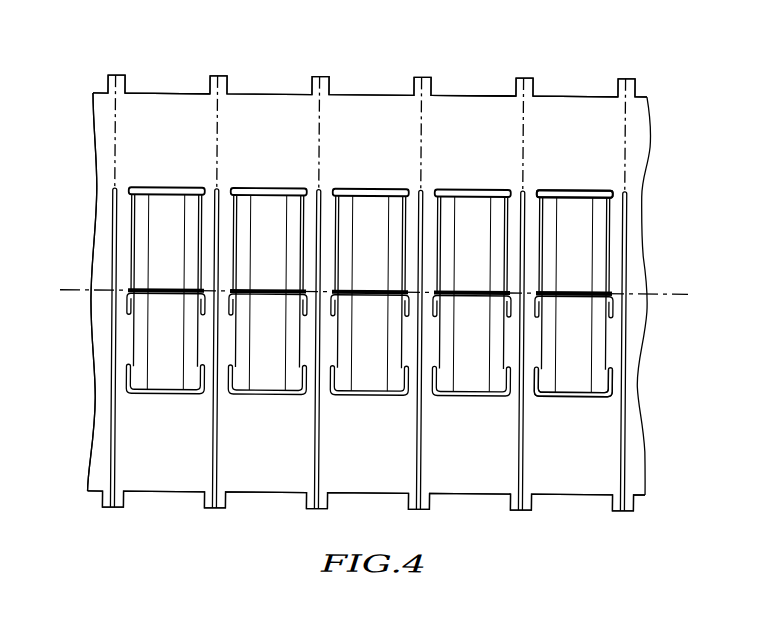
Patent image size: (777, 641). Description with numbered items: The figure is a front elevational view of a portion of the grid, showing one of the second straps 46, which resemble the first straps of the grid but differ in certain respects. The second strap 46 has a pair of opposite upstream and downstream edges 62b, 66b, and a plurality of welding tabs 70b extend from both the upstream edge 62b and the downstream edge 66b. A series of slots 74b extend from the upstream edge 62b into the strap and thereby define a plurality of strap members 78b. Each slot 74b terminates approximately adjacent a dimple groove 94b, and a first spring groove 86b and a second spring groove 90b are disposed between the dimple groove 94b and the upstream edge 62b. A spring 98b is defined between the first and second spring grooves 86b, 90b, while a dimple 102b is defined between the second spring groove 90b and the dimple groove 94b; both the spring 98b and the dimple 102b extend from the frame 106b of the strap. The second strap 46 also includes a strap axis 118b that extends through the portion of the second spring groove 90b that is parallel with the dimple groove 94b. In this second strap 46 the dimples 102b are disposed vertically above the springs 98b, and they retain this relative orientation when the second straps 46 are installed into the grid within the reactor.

The second strap 46 is at (443, 90).
The upstream edge 62b is at (158, 494).
The downstream edge 66b is at (148, 94).
The welding tab 70b is at (107, 78).
The slot 74b is at (114, 510).
The strap member 78b is at (175, 90).
The first spring groove 86b is at (575, 407).
The second spring groove 90b is at (575, 282).
The dimple groove 94b is at (594, 194).
The spring 98b is at (555, 406).
The dimple 102b is at (560, 183).
The frame 106b is at (583, 90).
The strap axis 118b is at (672, 294).